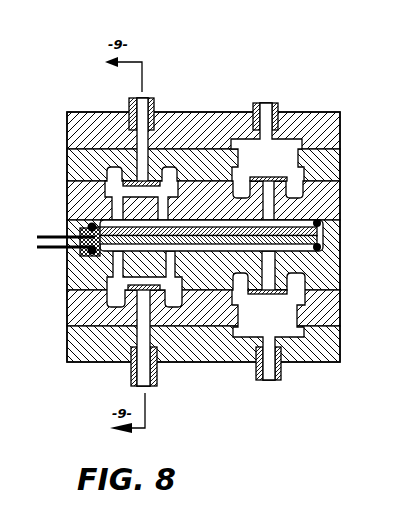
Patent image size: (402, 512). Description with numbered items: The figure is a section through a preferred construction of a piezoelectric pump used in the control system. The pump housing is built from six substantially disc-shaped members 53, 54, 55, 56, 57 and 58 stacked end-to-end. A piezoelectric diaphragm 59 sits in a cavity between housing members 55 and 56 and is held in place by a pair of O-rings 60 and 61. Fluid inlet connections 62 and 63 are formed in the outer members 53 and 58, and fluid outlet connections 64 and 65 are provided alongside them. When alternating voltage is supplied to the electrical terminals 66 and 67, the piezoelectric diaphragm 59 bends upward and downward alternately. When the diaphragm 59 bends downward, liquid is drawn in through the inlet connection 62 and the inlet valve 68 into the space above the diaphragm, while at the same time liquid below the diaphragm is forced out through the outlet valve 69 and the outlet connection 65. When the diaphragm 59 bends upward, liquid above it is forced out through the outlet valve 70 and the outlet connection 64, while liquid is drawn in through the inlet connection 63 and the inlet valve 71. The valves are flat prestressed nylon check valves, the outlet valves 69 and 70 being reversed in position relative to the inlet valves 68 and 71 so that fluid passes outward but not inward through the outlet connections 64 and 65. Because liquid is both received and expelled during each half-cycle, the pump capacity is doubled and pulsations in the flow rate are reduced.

The housing member 53 is at (340, 132).
The housing member 54 is at (338, 174).
The housing member 55 is at (340, 217).
The housing member 56 is at (335, 276).
The housing member 57 is at (340, 312).
The housing member 58 is at (340, 356).
The piezoelectric diaphragm 59 is at (340, 238).
The O-ring 60 is at (91, 224).
The O-ring 61 is at (92, 254).
The fluid inlet connection 62 is at (153, 105).
The fluid inlet connection 63 is at (157, 370).
The fluid outlet connection 64 is at (278, 103).
The fluid outlet connection 65 is at (281, 372).
The electrical terminal 66 is at (52, 236).
The electrical terminal 67 is at (50, 248).
The inlet valve 68 is at (123, 185).
The outlet valve 69 is at (287, 291).
The outlet valve 70 is at (287, 180).
The inlet valve 71 is at (128, 288).